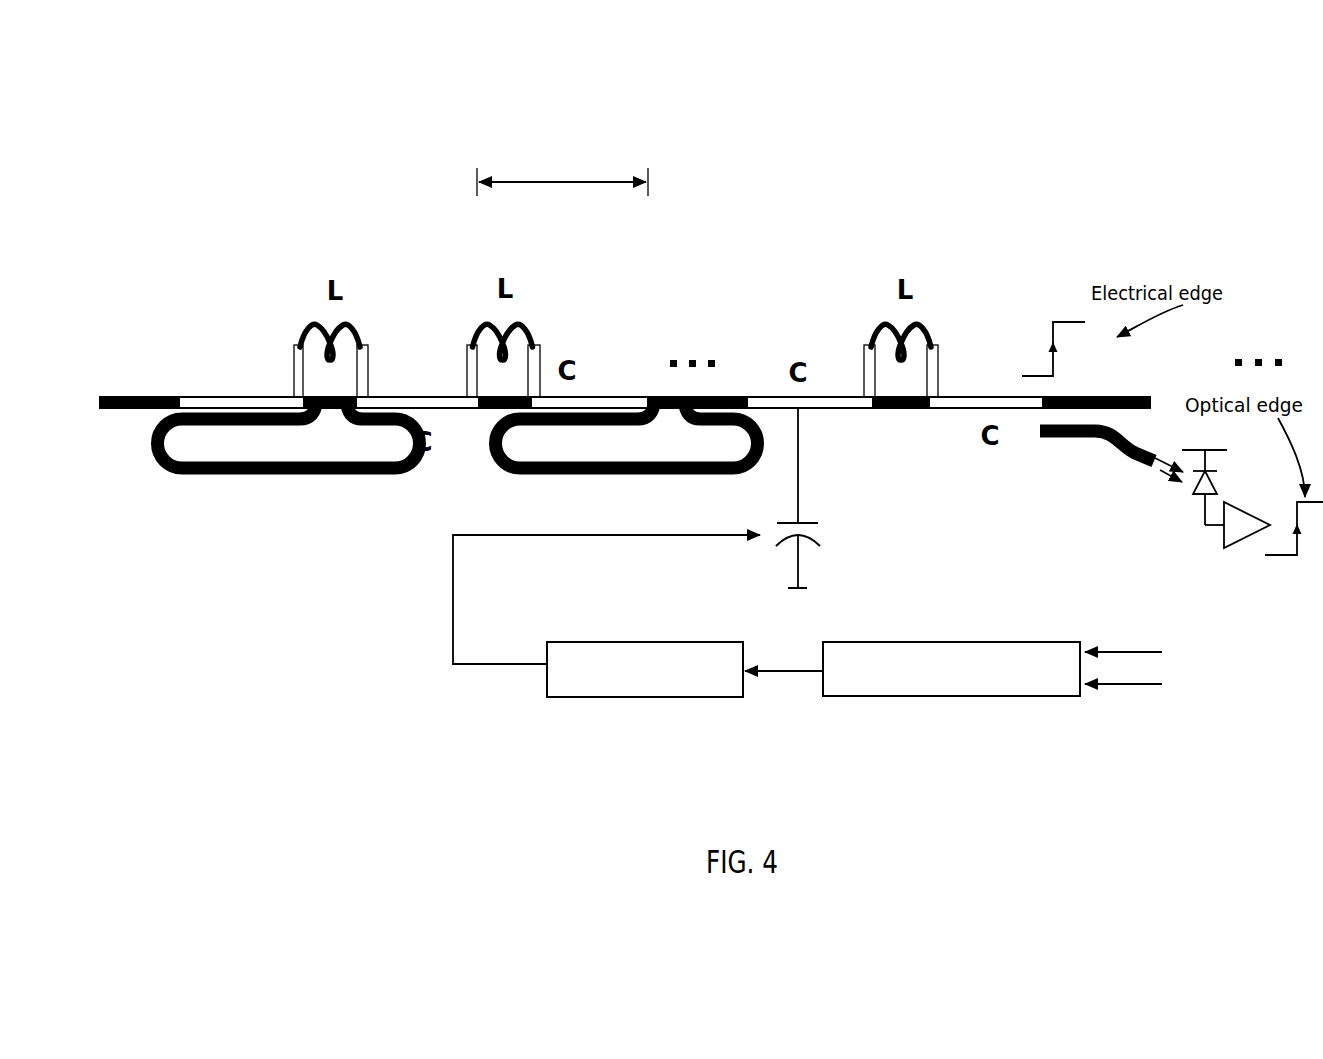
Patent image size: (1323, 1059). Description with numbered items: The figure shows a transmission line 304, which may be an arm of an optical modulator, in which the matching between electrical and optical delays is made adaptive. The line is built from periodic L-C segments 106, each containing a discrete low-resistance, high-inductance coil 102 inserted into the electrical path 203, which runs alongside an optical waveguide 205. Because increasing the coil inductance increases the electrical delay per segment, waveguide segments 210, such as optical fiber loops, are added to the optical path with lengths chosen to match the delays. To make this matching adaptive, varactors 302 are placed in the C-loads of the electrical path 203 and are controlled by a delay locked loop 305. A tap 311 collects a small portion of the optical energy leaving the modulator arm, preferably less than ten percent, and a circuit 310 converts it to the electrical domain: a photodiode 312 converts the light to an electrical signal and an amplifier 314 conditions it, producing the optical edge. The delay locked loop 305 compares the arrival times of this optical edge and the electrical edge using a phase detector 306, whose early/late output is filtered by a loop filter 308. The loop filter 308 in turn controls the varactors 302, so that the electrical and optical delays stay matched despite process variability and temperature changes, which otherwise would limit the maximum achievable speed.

The transmission line 304 is at (721, 66).
The L-C segment 106 is at (535, 182).
The coil 102 is at (352, 342).
The electrical path 203 is at (467, 380).
The optical waveguide 205 is at (130, 410).
The waveguide segment 210 is at (275, 472).
The varactor 302 is at (827, 549).
The delay locked loop 305 is at (508, 701).
The phase detector 306 is at (917, 697).
The loop filter 308 is at (710, 697).
The circuit 310 is at (1243, 518).
The tap 311 is at (1056, 446).
The photodiode 312 is at (1217, 485).
The amplifier 314 is at (1252, 509).